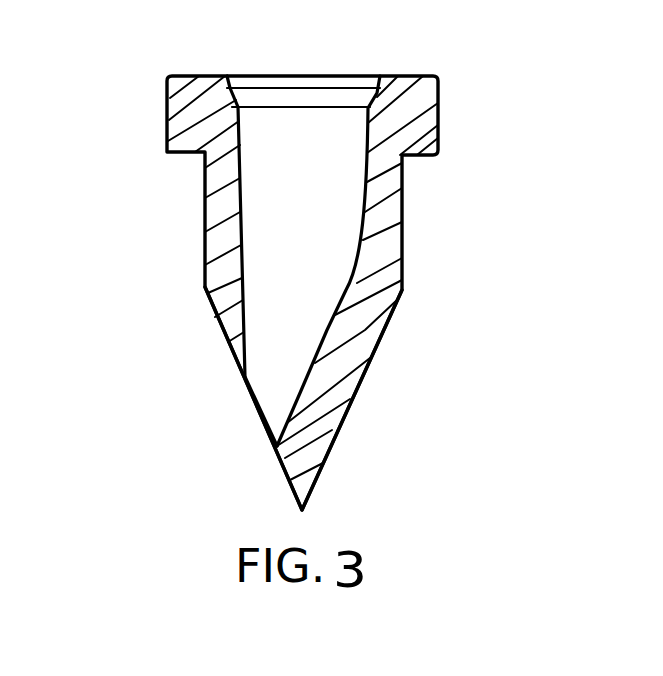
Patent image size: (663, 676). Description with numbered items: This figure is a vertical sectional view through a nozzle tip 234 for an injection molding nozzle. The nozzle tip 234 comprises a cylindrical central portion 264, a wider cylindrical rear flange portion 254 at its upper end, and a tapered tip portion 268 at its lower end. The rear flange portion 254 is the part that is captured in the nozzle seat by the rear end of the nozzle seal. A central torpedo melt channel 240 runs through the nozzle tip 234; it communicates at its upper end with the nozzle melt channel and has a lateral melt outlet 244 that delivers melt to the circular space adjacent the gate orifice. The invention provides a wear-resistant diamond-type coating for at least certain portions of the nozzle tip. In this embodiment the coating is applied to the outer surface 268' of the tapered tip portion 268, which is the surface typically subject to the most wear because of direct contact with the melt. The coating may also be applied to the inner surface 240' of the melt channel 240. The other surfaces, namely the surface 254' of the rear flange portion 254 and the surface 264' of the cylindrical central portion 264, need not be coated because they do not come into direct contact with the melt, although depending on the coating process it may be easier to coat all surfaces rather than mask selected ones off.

The nozzle tip 234 is at (352, 44).
The rear flange portion 254 is at (447, 115).
The surface of rear flange portion 254' is at (149, 120).
The cylindrical central portion 264 is at (178, 243).
The surface of cylindrical central portion 264' is at (182, 226).
The central torpedo melt channel 240 is at (411, 239).
The inner surface of melt channel 240' is at (360, 261).
The tapered tip portion 268 is at (375, 390).
The outer surface of tapered tip portion 268' is at (295, 398).
The lateral melt outlet 244 is at (260, 425).